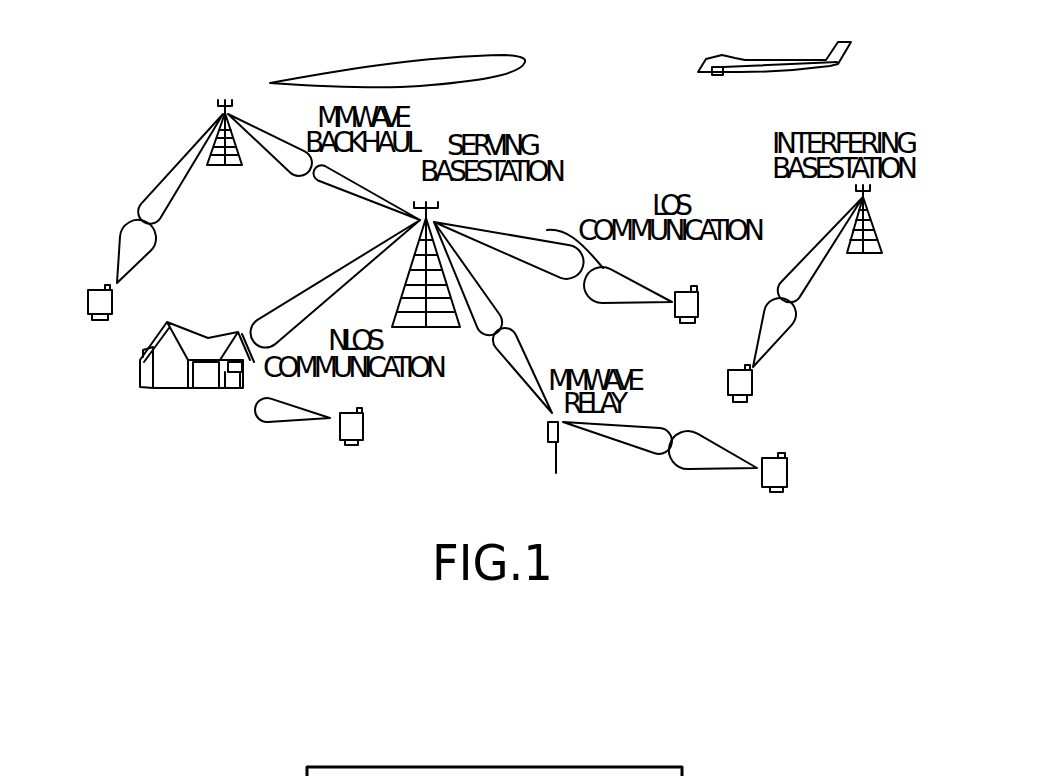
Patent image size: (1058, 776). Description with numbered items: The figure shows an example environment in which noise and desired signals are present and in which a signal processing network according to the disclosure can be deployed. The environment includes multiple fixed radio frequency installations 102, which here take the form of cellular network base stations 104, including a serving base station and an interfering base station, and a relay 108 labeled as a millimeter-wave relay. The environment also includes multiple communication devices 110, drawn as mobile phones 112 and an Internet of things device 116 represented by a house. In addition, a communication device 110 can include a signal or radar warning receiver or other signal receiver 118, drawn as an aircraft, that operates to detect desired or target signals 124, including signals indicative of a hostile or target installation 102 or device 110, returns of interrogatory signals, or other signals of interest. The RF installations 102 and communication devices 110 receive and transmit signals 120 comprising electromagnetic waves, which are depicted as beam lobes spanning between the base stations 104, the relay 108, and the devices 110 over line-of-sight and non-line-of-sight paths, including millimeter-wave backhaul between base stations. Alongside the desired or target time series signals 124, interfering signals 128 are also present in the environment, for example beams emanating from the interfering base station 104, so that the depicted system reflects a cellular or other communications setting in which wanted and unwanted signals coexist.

The fixed radio frequency installation 102 is at (215, 168).
The cellular network base station 104 is at (408, 288).
The relay 108 is at (560, 448).
The communication device 110 is at (100, 320).
The mobile phone 112 is at (363, 442).
The Internet of things device 116 is at (217, 391).
The signal receiver 118 is at (712, 75).
The signals 120 is at (428, 53).
The desired or target signals 124 is at (260, 315).
The interfering signals 128 is at (160, 177).